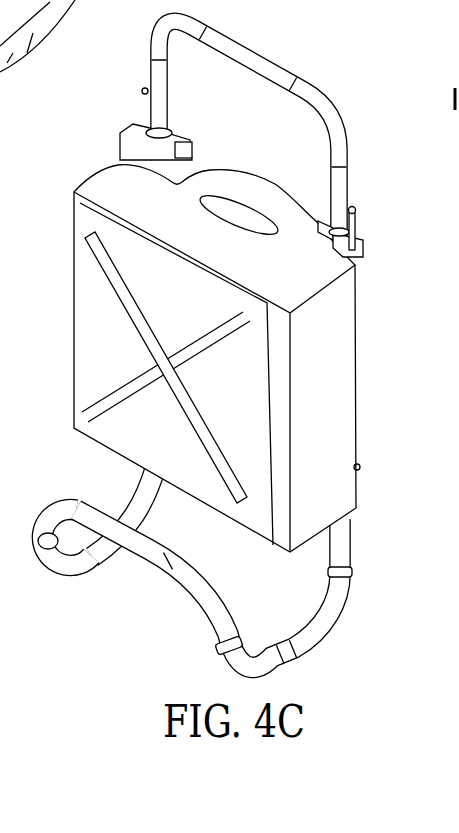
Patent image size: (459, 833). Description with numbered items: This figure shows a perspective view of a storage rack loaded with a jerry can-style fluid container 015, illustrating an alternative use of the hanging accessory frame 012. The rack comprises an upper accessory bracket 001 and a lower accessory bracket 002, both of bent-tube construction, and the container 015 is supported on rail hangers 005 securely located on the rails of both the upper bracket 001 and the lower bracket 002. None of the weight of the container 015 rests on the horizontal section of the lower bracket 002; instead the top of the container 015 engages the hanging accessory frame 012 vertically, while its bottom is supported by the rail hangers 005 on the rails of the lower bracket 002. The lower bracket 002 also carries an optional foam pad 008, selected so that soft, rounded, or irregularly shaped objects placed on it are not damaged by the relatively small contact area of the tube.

The upper accessory bracket 001 is at (181, 31).
The lower accessory bracket 002 is at (53, 506).
The rail hanger 005 is at (144, 89).
The foam pad 008 is at (223, 660).
The hanging accessory frame 012 is at (120, 143).
The jerry can/fluid container 015 is at (177, 327).